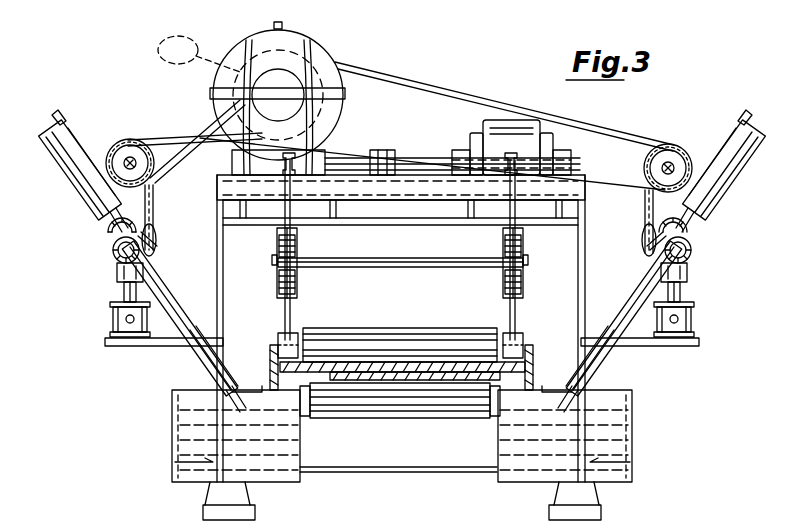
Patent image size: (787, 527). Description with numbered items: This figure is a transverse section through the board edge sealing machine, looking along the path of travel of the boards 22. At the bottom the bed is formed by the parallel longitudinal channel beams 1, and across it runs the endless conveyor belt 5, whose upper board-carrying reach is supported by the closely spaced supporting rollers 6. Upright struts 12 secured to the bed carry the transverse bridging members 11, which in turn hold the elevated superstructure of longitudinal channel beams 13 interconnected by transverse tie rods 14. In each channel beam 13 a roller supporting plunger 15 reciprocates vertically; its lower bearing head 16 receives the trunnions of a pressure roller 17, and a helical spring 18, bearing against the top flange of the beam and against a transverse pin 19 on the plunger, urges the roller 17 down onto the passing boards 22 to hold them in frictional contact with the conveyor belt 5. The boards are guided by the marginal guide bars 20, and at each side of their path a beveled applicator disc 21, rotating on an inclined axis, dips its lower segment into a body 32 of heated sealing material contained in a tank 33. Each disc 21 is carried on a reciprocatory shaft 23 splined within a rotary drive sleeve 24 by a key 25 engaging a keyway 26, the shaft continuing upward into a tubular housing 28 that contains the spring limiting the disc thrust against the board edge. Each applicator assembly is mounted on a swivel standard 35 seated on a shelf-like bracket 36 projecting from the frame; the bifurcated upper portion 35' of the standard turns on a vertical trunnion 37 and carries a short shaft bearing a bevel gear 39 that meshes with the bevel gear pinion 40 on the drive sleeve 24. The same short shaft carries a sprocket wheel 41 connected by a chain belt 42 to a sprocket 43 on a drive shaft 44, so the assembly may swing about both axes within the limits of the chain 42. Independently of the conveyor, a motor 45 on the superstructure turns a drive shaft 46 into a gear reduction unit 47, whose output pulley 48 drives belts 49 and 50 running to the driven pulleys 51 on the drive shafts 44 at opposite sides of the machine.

The channel beams 1 is at (198, 482).
The conveyor belt 5 is at (370, 418).
The supporting rollers 6 is at (412, 418).
The transverse bridging members 11 is at (416, 198).
The upright struts 12 is at (217, 268).
The longitudinal channel beams 13 is at (277, 288).
The transverse tie rods 14 is at (422, 268).
The roller supporting plungers 15 is at (292, 316).
The bearing head 16 is at (278, 336).
The pressure rollers 17 is at (382, 328).
The helical springs 18 is at (297, 244).
The transverse pins 19 is at (296, 284).
The marginal guide bars 20 is at (270, 352).
The applicator discs 21 is at (205, 395).
The boards 22 is at (445, 418).
The reciprocatory shafts 23 is at (218, 372).
The rotary drive sleeve 24 is at (218, 272).
The key 25 is at (205, 318).
The keyway 26 is at (170, 298).
The tubular housing 28 is at (75, 185).
The bodies of sealing material 32 is at (190, 424).
The tanks 33 is at (172, 448).
The swivel standard 35 is at (392, 321).
The upper portion of standard 35' is at (105, 274).
The shelf-like brackets 36 is at (134, 346).
The vertical trunnion 37 is at (124, 292).
The bevel gear 39 is at (156, 236).
The bevel gear pinion 40 is at (108, 236).
The sprocket wheel 41 is at (112, 250).
The chain belt 42 is at (154, 193).
The sprocket 43 is at (116, 145).
The drive shaft 44 is at (128, 158).
The motor 45 is at (517, 130).
The drive shaft 46 is at (420, 165).
The gear reduction unit 47 is at (330, 48).
The pulley 48 is at (240, 88).
The belt 49 is at (438, 90).
The belt 50 is at (190, 118).
The driven pulleys 51 is at (128, 140).